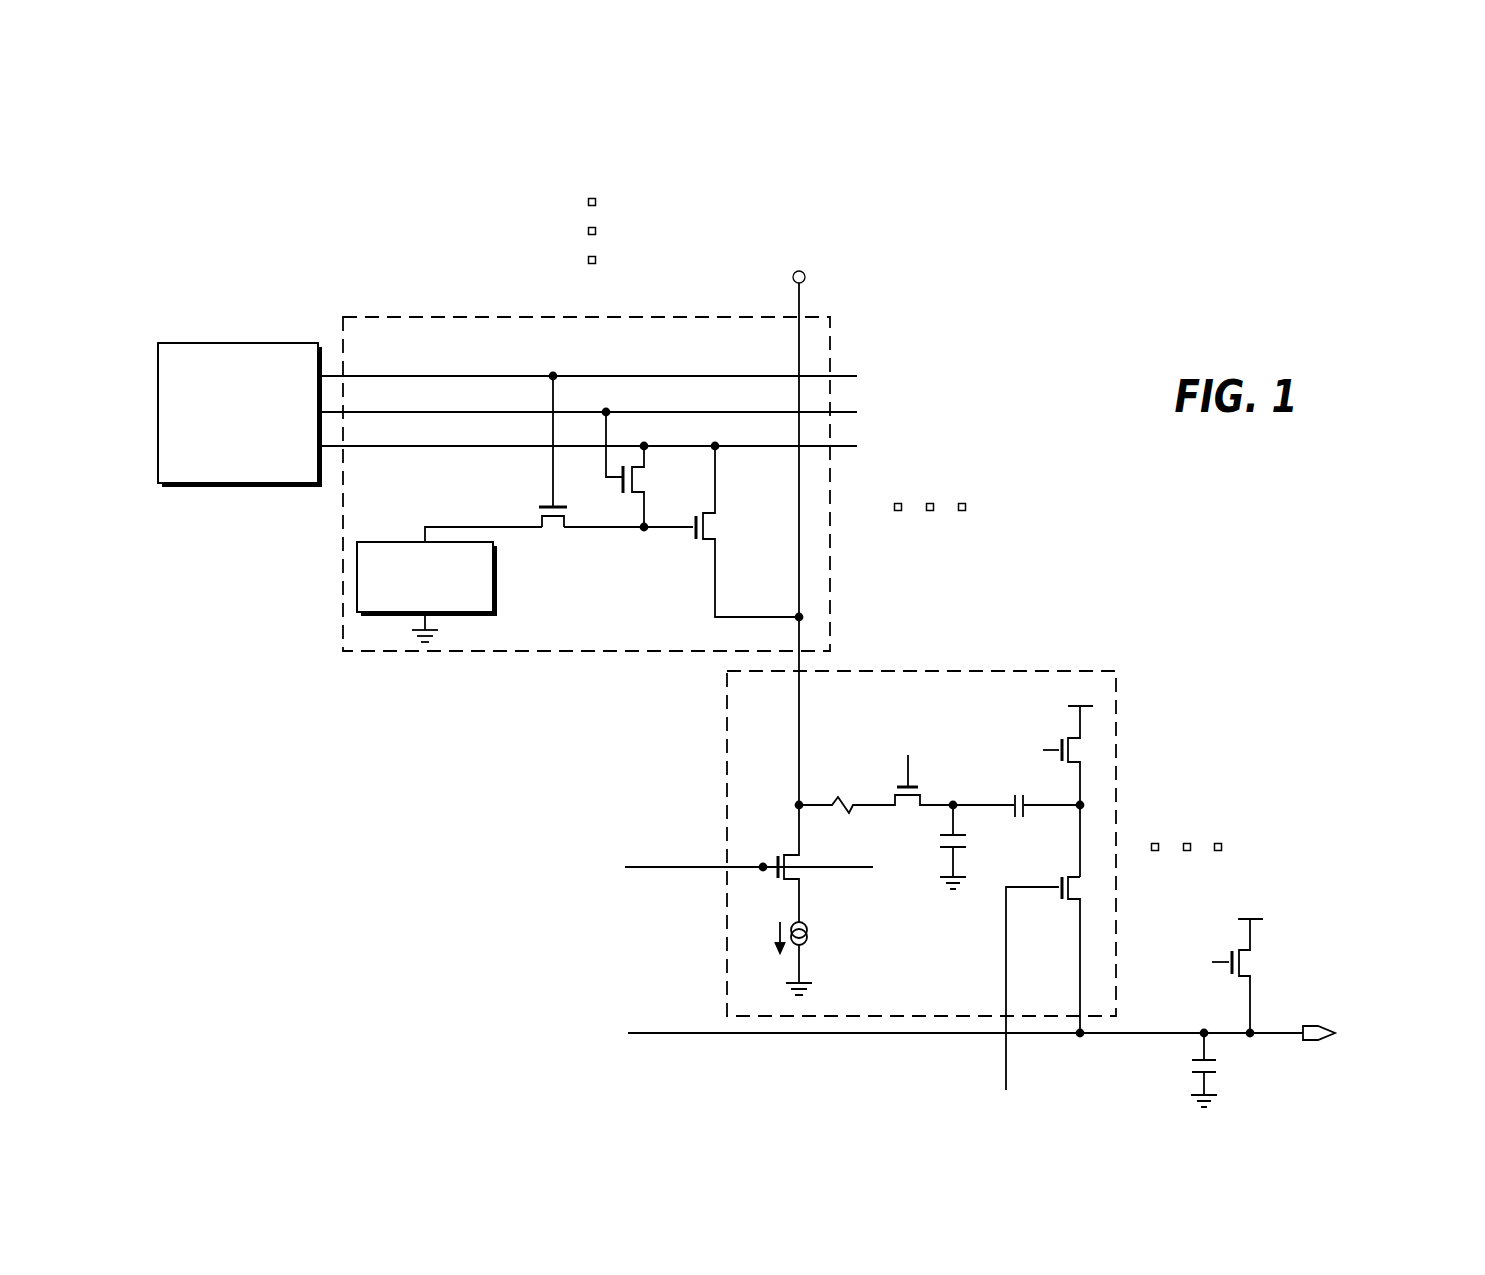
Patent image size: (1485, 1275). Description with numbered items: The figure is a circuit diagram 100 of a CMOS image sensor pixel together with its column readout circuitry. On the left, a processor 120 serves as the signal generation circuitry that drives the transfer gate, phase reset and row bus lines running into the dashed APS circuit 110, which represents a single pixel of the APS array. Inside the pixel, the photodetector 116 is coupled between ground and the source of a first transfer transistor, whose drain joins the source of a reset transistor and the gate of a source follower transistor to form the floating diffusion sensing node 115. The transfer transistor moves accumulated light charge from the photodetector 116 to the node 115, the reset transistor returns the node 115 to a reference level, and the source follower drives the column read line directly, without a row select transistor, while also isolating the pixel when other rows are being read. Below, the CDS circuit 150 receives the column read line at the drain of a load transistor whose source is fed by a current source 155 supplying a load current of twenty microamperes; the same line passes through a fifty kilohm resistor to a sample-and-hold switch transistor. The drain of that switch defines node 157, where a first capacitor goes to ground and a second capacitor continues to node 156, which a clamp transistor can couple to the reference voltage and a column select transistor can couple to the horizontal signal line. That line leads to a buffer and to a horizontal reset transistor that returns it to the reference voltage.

The circuit diagram 100 is at (1250, 477).
The APS circuit 110 is at (832, 332).
The floating diffusion sensing node 115 is at (600, 530).
The photodetector 116 is at (370, 542).
The processor 120 is at (212, 487).
The CDS circuit 150 is at (1117, 684).
The current source 155 is at (806, 922).
The node 156 is at (1082, 804).
The node 157 is at (953, 803).